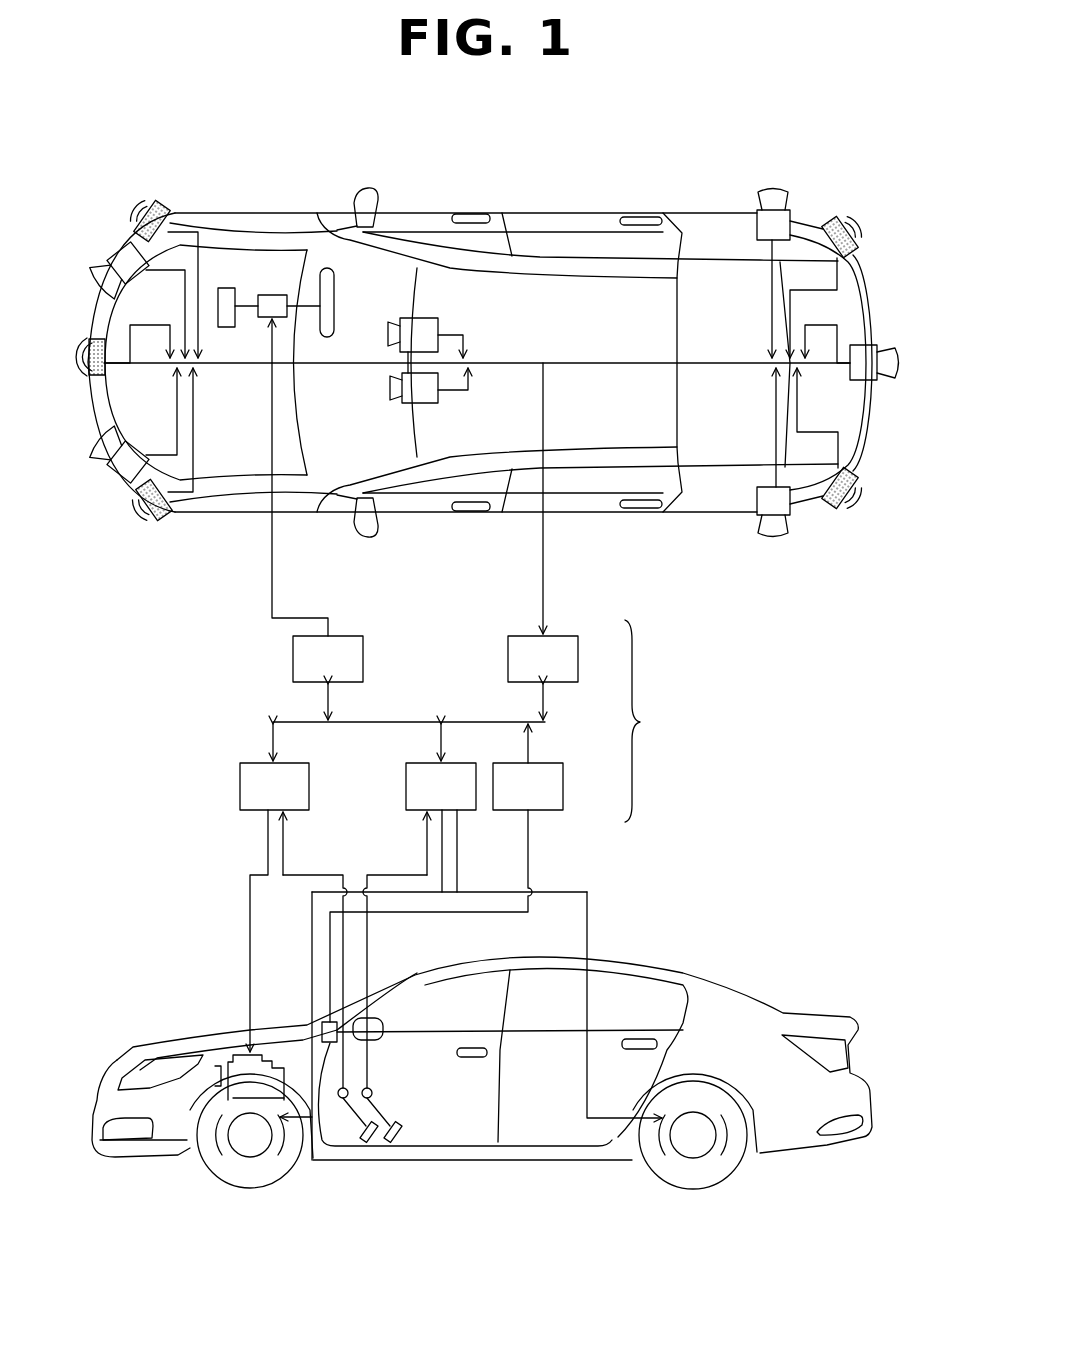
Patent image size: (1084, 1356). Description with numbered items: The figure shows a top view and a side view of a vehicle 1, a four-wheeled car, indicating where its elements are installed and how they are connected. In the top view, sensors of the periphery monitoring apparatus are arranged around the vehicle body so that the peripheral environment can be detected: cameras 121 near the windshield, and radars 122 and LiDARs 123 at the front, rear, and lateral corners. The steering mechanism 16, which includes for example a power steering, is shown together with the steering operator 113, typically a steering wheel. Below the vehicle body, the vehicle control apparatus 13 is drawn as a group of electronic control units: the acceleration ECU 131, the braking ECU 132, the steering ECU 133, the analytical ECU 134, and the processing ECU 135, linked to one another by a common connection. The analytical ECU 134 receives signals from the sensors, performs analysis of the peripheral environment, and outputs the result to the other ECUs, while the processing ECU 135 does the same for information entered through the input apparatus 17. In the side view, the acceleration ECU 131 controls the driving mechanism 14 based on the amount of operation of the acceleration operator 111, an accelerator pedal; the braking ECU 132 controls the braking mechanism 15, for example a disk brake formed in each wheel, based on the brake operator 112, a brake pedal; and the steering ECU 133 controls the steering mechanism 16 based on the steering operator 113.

The vehicle 1 is at (692, 163).
The vehicle control apparatus 13 is at (458, 721).
The driving mechanism 14 is at (224, 1058).
The braking mechanism 15 is at (253, 1158).
The steering mechanism 16 is at (272, 294).
The input apparatus 17 is at (320, 1028).
The acceleration operator 111 is at (372, 1142).
The brake operator 112 is at (396, 1142).
The steering operator 113 is at (336, 288).
The camera 121 is at (437, 318).
The radar 122 is at (162, 205).
The LiDAR 123 is at (113, 256).
The acceleration ECU 131 is at (274, 767).
The braking ECU 132 is at (441, 767).
The steering ECU 133 is at (328, 678).
The analytical ECU 134 is at (543, 678).
The processing ECU 135 is at (528, 767).